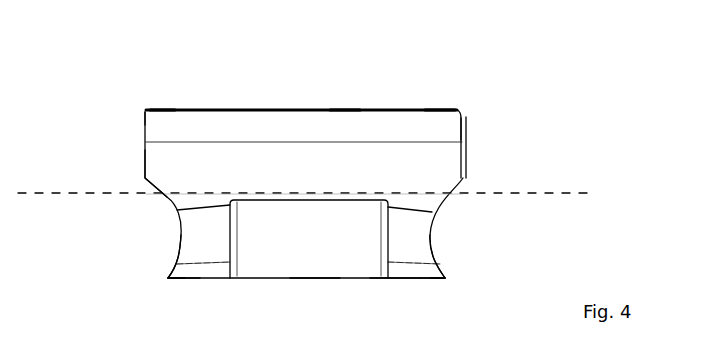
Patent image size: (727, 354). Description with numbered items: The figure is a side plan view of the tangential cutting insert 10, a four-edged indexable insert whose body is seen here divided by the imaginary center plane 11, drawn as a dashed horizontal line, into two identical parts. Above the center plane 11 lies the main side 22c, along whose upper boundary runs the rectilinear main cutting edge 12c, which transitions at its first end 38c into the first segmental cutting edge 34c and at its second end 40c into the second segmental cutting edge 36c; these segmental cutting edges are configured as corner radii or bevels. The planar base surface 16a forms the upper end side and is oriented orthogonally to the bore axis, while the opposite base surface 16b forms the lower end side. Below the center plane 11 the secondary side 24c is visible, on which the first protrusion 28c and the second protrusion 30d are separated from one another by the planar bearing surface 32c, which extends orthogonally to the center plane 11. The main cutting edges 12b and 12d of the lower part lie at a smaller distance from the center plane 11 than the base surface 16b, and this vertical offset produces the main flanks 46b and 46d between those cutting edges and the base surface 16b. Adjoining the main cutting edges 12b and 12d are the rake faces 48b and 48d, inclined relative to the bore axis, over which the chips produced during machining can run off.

The cutting insert 10 is at (614, 118).
The center plane 11 is at (556, 192).
The main cutting edge 12b is at (170, 278).
The main cutting edge 12c is at (278, 110).
The main cutting edge 12d is at (440, 277).
The base surface 16a is at (345, 108).
The base surface 16b is at (395, 280).
The main side 22c is at (222, 158).
The secondary side 24c is at (272, 261).
The first protrusion 28c is at (197, 262).
The second protrusion 30d is at (437, 280).
The bearing surface 32c is at (315, 253).
The first segmental cutting edge 34c is at (148, 110).
The second segmental cutting edge 36c is at (455, 110).
The first end 38c is at (160, 110).
The second end 40c is at (440, 110).
The main flank 46b is at (172, 281).
The main flank 46d is at (440, 280).
The rake face 48b is at (175, 252).
The rake face 48d is at (437, 248).